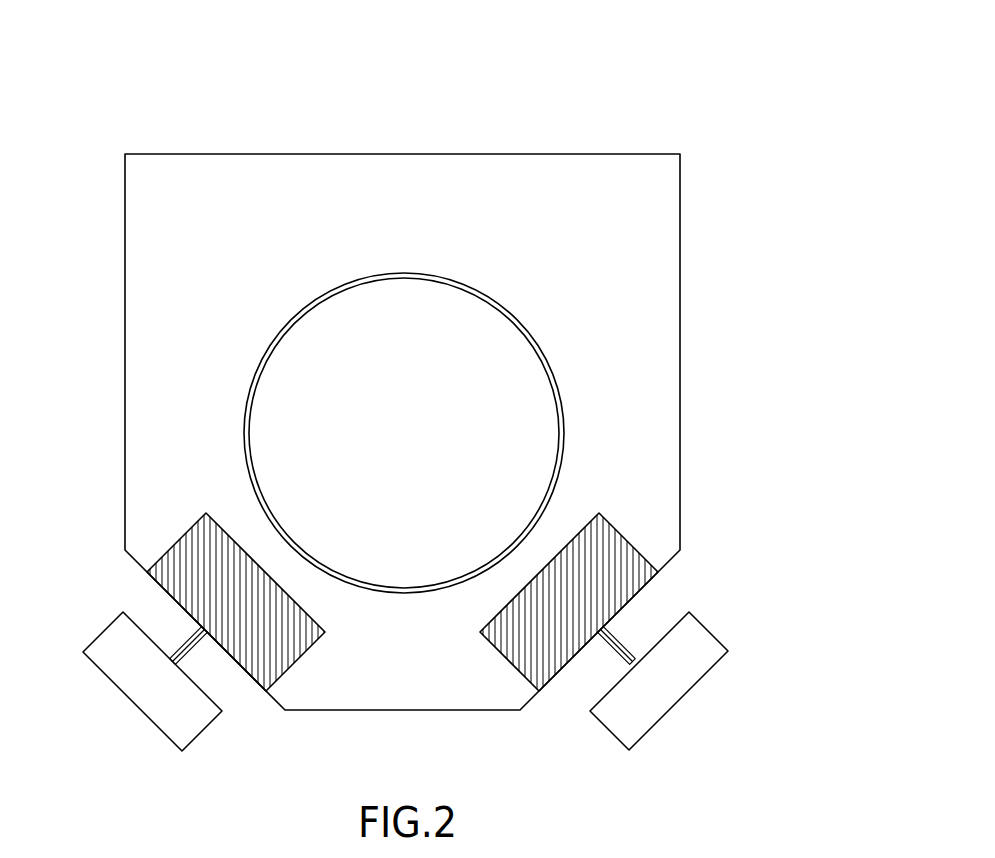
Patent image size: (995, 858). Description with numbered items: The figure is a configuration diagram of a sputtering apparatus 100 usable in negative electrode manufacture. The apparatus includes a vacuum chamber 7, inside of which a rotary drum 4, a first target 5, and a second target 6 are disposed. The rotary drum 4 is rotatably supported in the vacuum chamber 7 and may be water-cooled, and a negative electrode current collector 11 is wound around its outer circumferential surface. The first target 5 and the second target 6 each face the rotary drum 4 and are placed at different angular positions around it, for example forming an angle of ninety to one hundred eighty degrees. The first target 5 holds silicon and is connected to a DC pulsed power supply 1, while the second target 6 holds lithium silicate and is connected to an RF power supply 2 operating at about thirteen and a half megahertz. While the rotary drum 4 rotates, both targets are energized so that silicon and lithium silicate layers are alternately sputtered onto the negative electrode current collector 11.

The sputtering apparatus 100 is at (628, 90).
The vacuum chamber 7 is at (681, 193).
The negative electrode current collector 11 is at (252, 386).
The rotary drum 4 is at (470, 392).
The second target 6 is at (190, 560).
The first target 5 is at (603, 555).
The RF power supply 2 is at (147, 697).
The DC pulsed power supply 1 is at (657, 685).